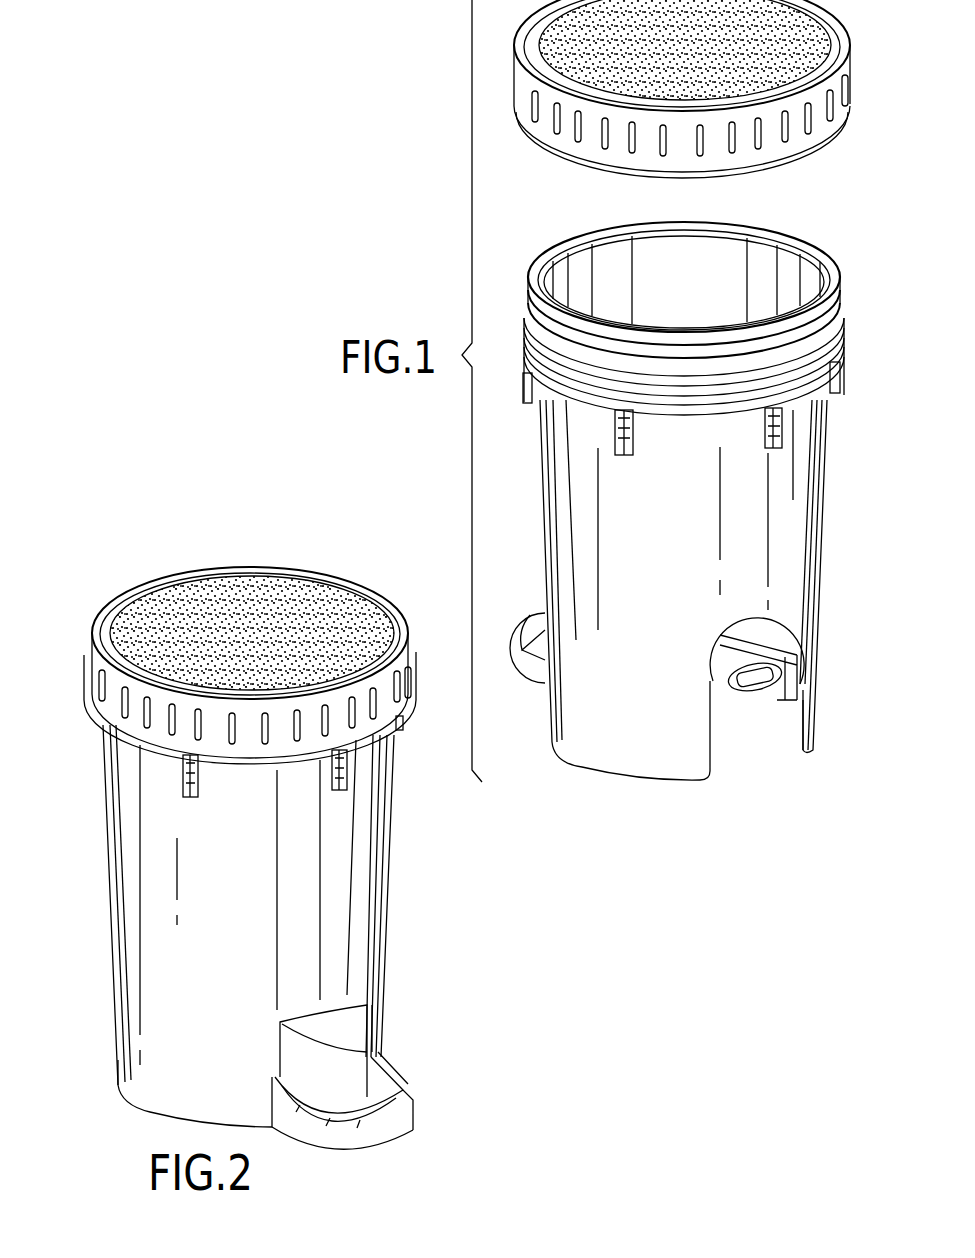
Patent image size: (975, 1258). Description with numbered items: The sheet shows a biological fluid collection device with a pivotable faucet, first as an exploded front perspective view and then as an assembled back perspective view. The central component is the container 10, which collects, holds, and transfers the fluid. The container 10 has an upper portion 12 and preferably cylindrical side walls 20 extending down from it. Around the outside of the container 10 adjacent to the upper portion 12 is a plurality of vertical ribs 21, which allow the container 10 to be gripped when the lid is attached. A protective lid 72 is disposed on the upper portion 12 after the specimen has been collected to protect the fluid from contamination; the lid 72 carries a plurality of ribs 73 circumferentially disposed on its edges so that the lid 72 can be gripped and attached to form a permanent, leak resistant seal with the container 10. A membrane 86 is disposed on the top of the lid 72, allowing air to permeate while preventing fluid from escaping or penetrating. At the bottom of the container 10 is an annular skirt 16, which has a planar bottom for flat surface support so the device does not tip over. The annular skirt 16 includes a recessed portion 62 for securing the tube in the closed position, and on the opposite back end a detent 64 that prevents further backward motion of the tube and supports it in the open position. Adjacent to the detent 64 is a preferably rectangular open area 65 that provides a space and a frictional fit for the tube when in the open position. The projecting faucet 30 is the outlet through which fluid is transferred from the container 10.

In FIG. 1, the container 10 is at (527, 540).
In FIG. 1, the upper portion 12 is at (836, 279).
In FIG. 1, the annular skirt 16 is at (808, 712).
In FIG. 2, the annular skirt 16 is at (127, 1067).
In FIG. 1, the side walls 20 is at (812, 452).
In FIG. 2, the side walls 20 is at (123, 907).
In FIG. 1, the vertical ribs 21 is at (698, 431).
In FIG. 2, the vertical ribs 21 is at (333, 782).
In FIG. 1, the projecting faucet 30 is at (718, 683).
In FIG. 1, the recessed portion 62 is at (783, 643).
In FIG. 1, the detent 64 is at (523, 655).
In FIG. 2, the detent 64 is at (394, 1122).
In FIG. 2, the open area 65 is at (323, 1060).
In FIG. 1, the protective lid 72 is at (517, 72).
In FIG. 2, the protective lid 72 is at (240, 646).
In FIG. 2, the ribs 73 is at (414, 670).
In FIG. 2, the membrane 86 is at (190, 610).